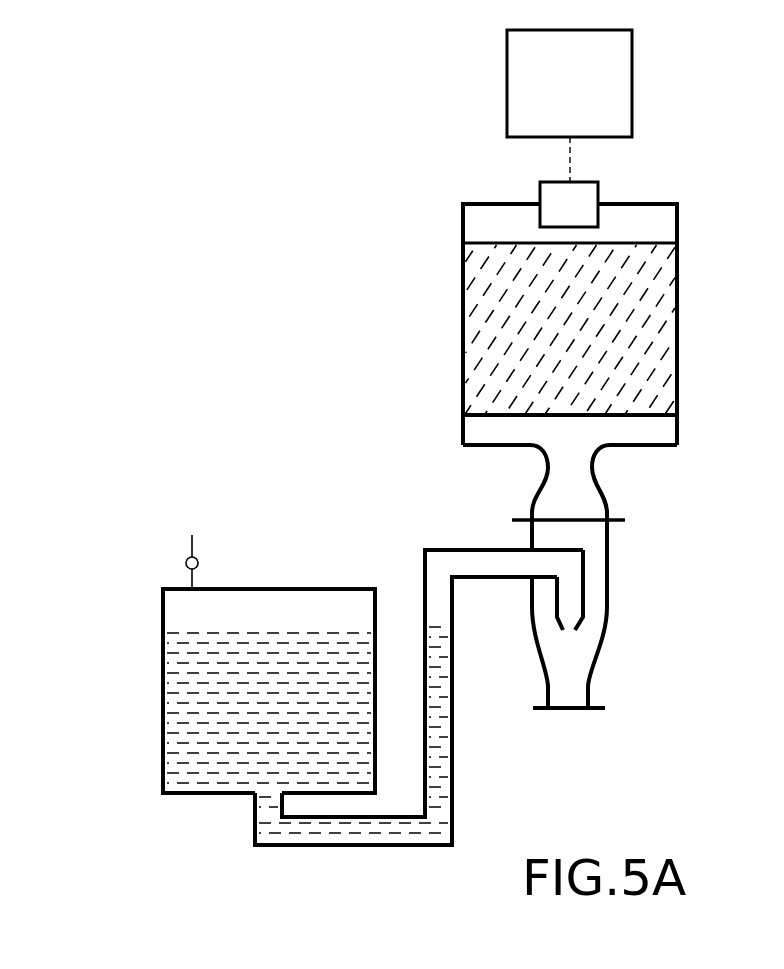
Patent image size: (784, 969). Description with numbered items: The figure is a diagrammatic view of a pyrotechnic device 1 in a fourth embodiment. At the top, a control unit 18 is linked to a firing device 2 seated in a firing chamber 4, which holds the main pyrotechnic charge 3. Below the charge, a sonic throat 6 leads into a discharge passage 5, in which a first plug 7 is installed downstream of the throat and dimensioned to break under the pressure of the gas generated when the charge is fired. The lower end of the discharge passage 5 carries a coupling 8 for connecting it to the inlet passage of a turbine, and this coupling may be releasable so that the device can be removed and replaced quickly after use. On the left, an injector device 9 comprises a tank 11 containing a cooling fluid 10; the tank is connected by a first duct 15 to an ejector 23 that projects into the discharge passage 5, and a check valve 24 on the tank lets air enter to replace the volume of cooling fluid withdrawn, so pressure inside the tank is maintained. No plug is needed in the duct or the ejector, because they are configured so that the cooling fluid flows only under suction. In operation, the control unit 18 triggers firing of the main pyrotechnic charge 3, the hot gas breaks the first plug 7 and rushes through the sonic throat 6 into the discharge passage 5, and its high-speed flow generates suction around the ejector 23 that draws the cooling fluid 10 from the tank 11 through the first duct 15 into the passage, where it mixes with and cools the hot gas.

The pyrotechnic device 1 is at (704, 112).
The firing device 2 is at (581, 188).
The main pyrotechnic charge 3 is at (646, 334).
The firing chamber 4 is at (658, 431).
The discharge passage 5 is at (580, 667).
The sonic throat 6 is at (592, 461).
The first plug 7 is at (591, 522).
The coupling 8 is at (540, 706).
The injector device 9 is at (241, 860).
The cooling fluid 10 is at (197, 758).
The tank 11 is at (163, 690).
The first duct 15 is at (347, 846).
The control unit 18 is at (578, 97).
The ejector 23 is at (584, 597).
The check valve 24 is at (200, 566).